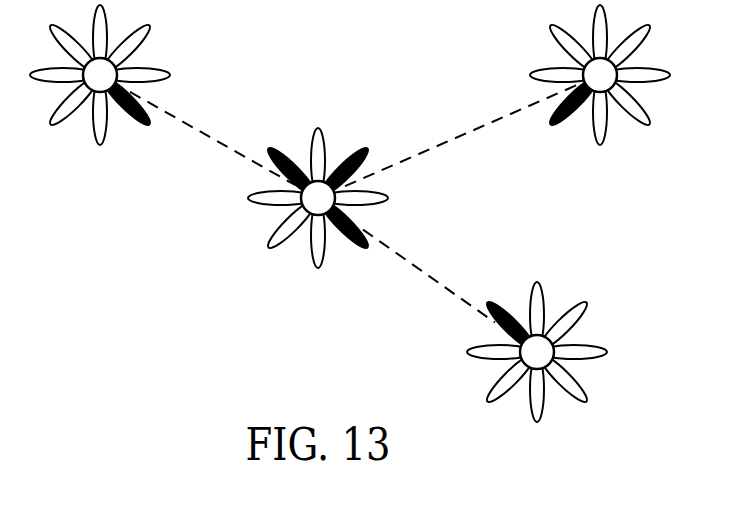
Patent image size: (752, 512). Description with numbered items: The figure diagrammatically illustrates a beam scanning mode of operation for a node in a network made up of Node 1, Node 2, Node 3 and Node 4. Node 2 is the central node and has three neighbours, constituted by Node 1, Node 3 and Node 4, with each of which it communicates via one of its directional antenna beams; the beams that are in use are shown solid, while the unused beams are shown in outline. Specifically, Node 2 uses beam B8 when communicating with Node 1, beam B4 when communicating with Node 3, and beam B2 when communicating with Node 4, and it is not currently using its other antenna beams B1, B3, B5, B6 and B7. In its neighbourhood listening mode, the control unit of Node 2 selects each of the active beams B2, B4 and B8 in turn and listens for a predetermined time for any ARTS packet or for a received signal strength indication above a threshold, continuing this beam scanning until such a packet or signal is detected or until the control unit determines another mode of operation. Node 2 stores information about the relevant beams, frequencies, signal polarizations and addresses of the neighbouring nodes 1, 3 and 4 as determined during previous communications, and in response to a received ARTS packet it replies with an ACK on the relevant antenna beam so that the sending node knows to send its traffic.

The Node 1 is at (100, 75).
The Node 2 is at (320, 199).
The Node 3 is at (537, 352).
The Node 4 is at (600, 75).
The antenna beam B1 is at (318, 143).
The antenna beam B2 is at (359, 157).
The antenna beam B3 is at (374, 198).
The antenna beam B4 is at (359, 240).
The antenna beam B5 is at (318, 254).
The antenna beam B6 is at (278, 240).
The antenna beam B7 is at (265, 198).
The antenna beam B8 is at (278, 157).